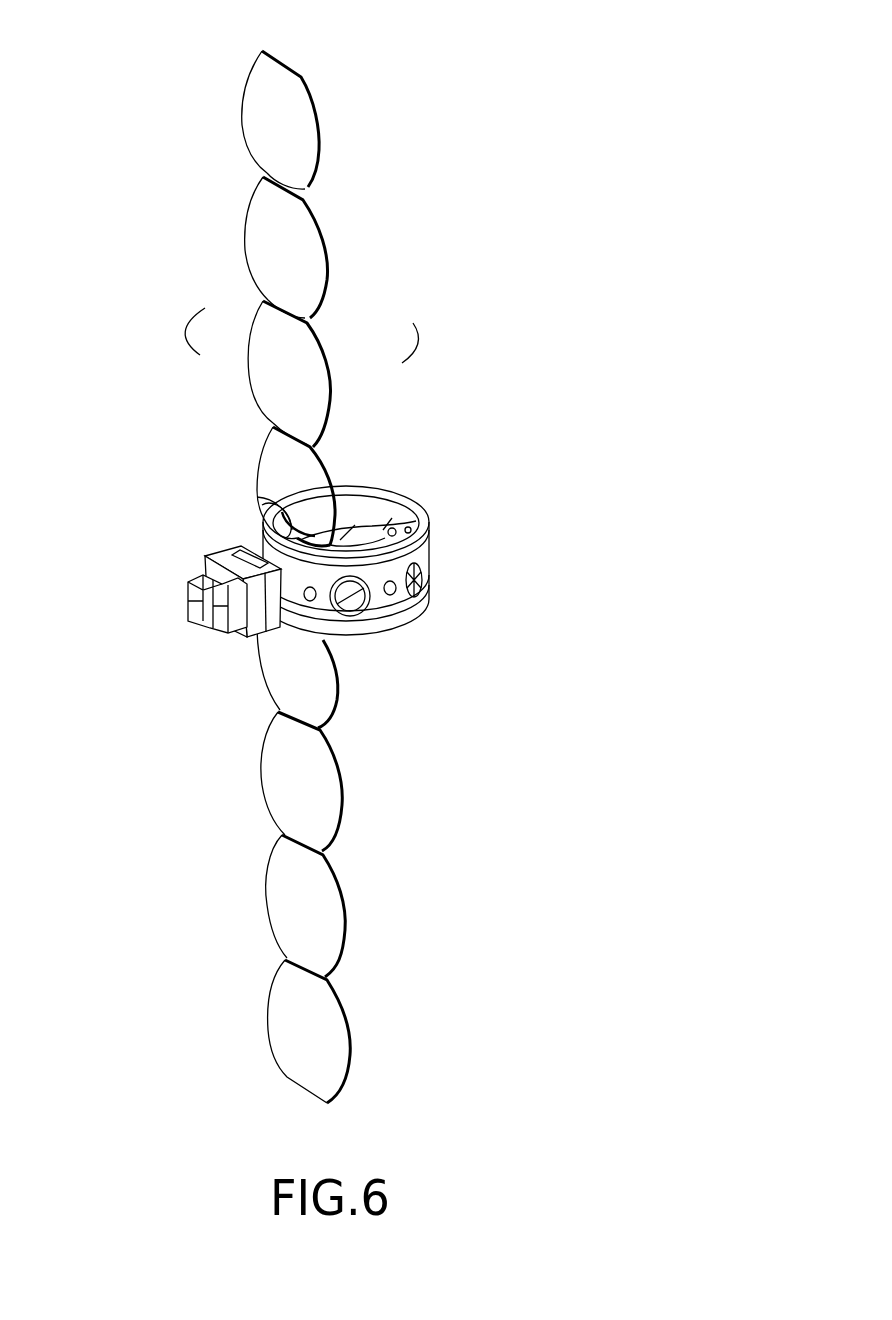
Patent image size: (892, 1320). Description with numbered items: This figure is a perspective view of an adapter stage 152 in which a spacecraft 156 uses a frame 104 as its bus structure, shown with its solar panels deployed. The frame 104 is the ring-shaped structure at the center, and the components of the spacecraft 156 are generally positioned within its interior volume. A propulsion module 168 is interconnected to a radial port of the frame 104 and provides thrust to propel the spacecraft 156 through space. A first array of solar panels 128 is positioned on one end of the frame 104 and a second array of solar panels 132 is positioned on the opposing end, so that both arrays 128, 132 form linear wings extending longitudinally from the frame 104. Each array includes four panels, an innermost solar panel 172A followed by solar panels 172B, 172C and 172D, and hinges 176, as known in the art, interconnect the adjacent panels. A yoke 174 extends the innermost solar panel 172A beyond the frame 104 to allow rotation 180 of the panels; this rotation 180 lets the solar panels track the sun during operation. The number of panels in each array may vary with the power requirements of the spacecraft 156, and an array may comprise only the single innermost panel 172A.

The frame 104 is at (437, 518).
The first array of solar panels 128 is at (322, 108).
The second array of solar panels 132 is at (280, 1063).
The adapter stage 152 is at (543, 247).
The spacecraft 156 is at (373, 523).
The propulsion module 168 is at (207, 567).
The innermost solar panel 172A is at (267, 455).
The solar panel 172B is at (255, 387).
The solar panel 172C is at (247, 233).
The solar panel 172D is at (252, 73).
The yoke 174 is at (257, 497).
The hinges 176 is at (303, 188).
The rotation 180 is at (212, 362).